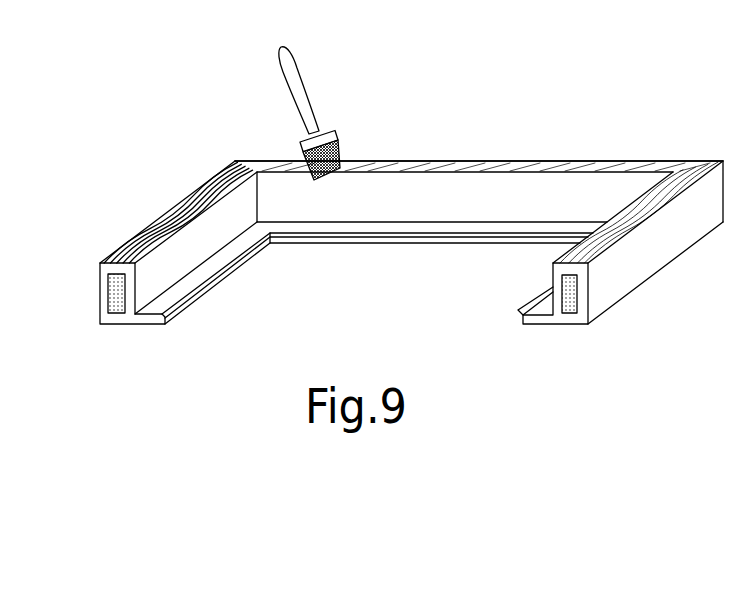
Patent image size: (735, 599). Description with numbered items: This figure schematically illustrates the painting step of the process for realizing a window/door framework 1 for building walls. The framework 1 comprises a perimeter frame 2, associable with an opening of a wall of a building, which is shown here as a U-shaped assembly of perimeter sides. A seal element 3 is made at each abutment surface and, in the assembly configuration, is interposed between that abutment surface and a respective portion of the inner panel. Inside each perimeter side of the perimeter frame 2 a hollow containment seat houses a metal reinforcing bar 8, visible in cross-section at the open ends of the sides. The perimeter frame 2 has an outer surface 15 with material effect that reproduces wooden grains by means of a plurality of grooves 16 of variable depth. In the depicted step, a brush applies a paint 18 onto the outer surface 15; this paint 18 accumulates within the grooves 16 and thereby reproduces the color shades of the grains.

The window/door framework 1 is at (408, 222).
The perimeter frame 2 is at (621, 255).
The seal element 3 is at (186, 238).
The metal reinforcing bar 8 is at (120, 294).
The outer surface 15 is at (657, 137).
The grooves 16 is at (608, 242).
The paint 18 is at (258, 168).